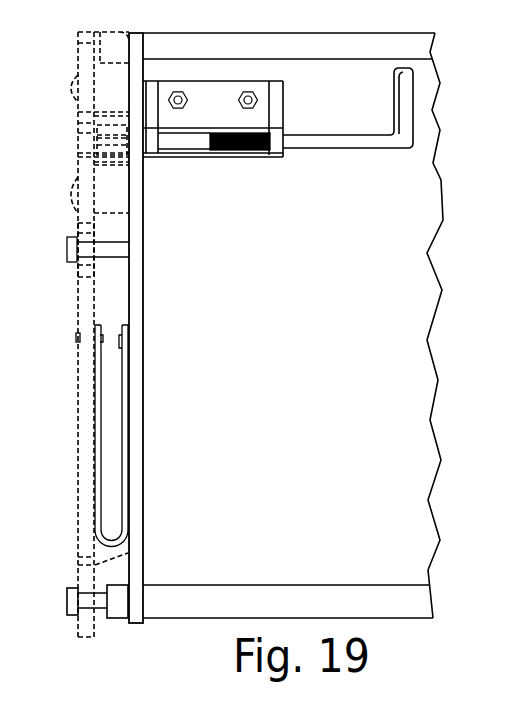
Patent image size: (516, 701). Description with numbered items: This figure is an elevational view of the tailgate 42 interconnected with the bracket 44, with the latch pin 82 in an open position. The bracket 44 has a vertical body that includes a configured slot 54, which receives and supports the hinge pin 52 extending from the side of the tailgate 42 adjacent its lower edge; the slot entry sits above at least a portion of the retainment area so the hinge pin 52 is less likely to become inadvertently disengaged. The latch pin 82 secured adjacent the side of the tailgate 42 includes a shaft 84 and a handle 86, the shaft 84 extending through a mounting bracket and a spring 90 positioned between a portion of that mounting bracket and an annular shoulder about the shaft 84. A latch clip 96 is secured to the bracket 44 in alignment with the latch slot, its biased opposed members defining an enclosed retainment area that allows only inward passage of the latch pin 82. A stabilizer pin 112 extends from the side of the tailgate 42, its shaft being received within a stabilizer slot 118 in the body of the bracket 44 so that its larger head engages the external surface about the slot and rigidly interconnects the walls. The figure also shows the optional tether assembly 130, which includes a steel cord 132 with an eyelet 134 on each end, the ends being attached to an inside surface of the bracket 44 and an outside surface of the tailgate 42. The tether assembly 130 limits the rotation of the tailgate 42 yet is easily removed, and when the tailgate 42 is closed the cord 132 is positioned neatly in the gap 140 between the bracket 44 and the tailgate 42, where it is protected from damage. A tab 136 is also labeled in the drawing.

The tailgate 42 is at (135, 312).
The bracket 44 is at (78, 70).
The hinge pin 52 is at (72, 607).
The configured slot 54 is at (80, 592).
The latch pin 82 is at (183, 155).
The shaft 84 is at (350, 147).
The handle 86 is at (408, 103).
The spring 90 is at (243, 152).
The latch clip 96 is at (78, 133).
The stabilizer pin 112 is at (68, 237).
The stabilizer slot 118 is at (85, 258).
The tether assembly 130 is at (95, 447).
The steel cord 132 is at (97, 473).
The eyelet 134 is at (95, 347).
The tab 136 is at (77, 338).
The gap 140 is at (113, 392).